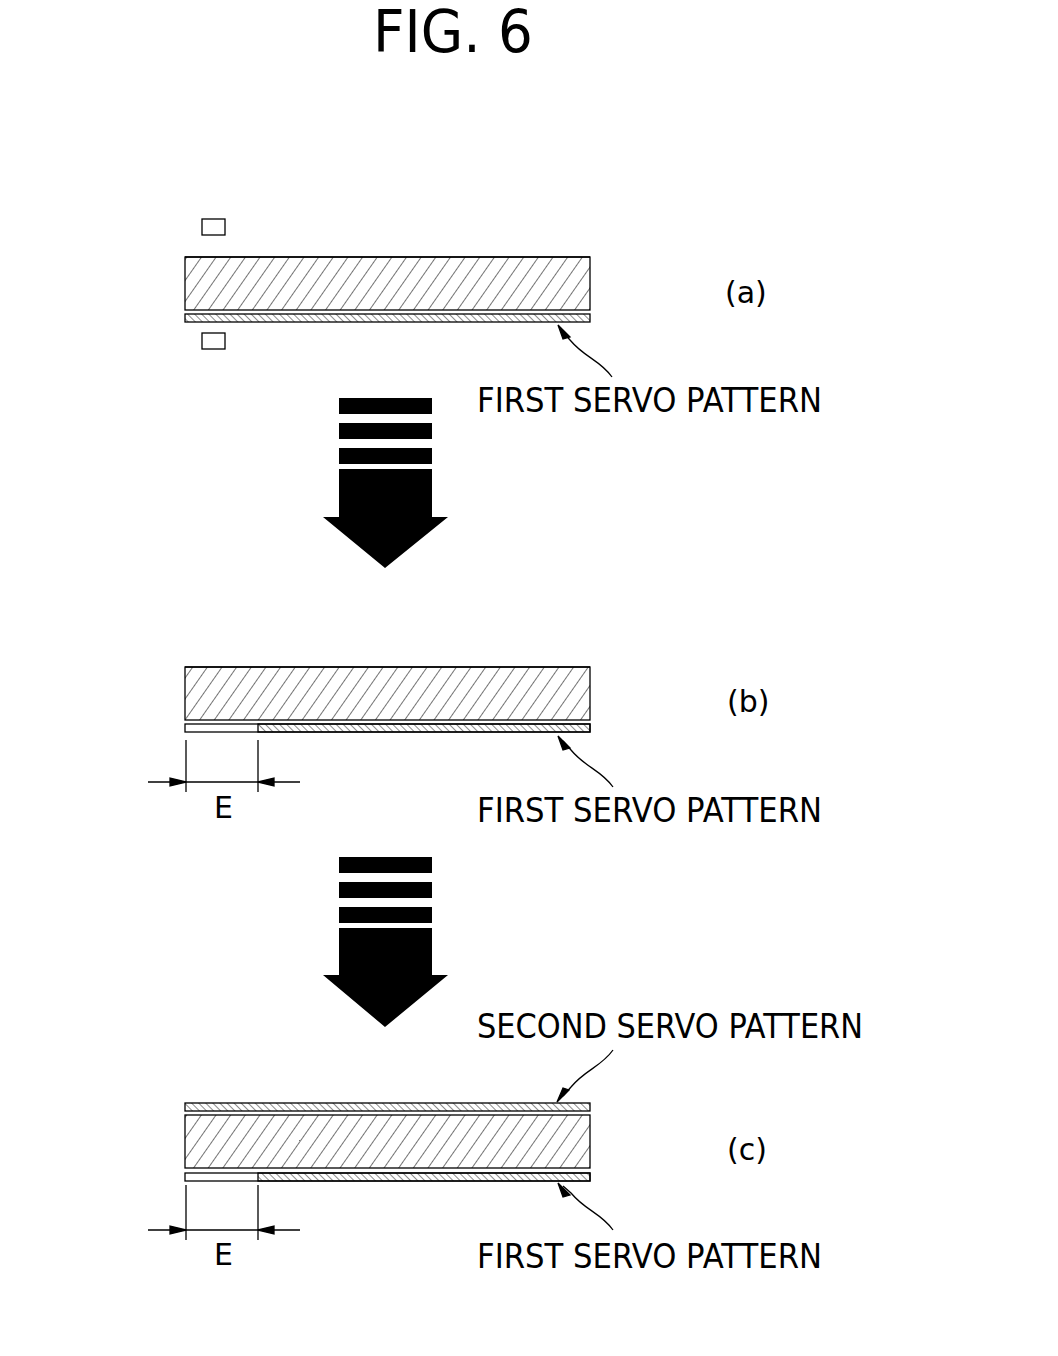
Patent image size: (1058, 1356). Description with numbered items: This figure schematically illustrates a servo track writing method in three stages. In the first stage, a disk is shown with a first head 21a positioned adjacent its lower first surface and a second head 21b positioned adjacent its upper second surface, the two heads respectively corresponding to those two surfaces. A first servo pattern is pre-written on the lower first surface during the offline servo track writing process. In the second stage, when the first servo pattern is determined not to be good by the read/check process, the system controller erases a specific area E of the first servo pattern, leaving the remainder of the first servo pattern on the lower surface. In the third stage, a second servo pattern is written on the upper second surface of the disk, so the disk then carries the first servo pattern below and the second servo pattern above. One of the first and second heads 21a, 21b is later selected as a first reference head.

The first head 21a is at (213, 349).
The second head 21b is at (213, 219).